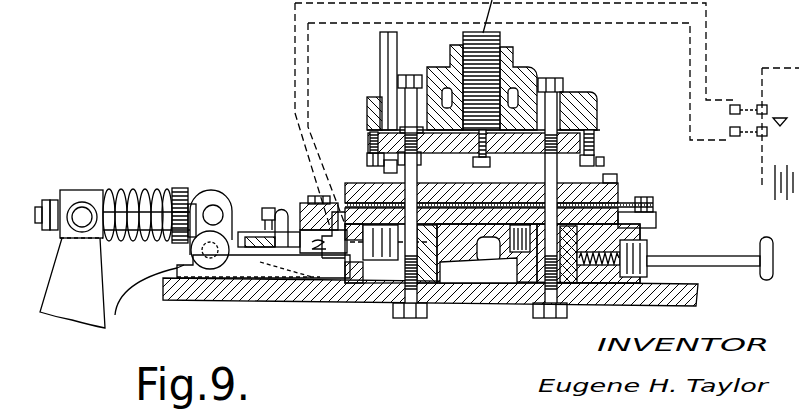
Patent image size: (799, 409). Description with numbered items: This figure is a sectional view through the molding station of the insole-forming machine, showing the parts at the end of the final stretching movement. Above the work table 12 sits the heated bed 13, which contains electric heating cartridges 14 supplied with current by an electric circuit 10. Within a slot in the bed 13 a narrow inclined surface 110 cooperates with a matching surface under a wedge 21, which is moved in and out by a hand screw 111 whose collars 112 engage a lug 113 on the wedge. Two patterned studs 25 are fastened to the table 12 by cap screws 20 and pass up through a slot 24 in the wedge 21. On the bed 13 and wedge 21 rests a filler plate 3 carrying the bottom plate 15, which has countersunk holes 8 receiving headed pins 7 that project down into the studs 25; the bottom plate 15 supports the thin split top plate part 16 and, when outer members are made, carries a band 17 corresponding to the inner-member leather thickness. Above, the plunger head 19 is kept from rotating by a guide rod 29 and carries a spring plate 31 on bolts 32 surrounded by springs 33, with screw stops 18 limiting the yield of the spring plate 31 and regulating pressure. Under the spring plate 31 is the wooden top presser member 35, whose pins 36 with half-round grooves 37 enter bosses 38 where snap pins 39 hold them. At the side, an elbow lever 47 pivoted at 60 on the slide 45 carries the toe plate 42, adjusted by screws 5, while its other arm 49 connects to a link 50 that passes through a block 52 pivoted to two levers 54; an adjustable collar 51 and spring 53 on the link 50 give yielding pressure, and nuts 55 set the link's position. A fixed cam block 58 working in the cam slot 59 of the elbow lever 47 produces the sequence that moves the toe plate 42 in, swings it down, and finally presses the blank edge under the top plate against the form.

The filler plate 3 is at (640, 230).
The screws 5 is at (266, 207).
The pins 7 is at (481, 160).
The countersunk holes 8 is at (474, 158).
The electric circuit 10 is at (710, 44).
The work table 12 is at (697, 288).
The heated bed 13 is at (342, 283).
The electric heating cartridges 14 is at (465, 275).
The bottom plate 15 is at (657, 220).
The split top plate part 16 is at (610, 190).
The band 17 is at (368, 173).
The screw stops 18 is at (491, 163).
The head 19 is at (525, 70).
The cap screws 20 is at (405, 320).
The wedge 21 is at (520, 256).
The slot 24 is at (488, 266).
The patterned studs 25 is at (372, 283).
The guide rod 29 is at (387, 52).
The spring plate 31 is at (595, 134).
The bolts 32 is at (404, 96).
The springs 33 is at (560, 120).
The top presser member 35 is at (612, 176).
The pins 36 is at (612, 164).
The half-round annular groove 37 is at (421, 161).
The bosses 38 is at (371, 135).
The snap pins 39 is at (376, 157).
The toe plate 42 is at (295, 173).
The slide 45 is at (148, 293).
The elbow lever 47 is at (245, 292).
The arm of elbow lever 49 is at (197, 192).
The link 50 is at (115, 210).
The adjustable collar 51 is at (180, 187).
The block 52 is at (63, 190).
The spring 53 is at (143, 197).
The levers 54 is at (68, 302).
The nuts 55 is at (53, 198).
The fixed cam block 58 is at (230, 196).
The cam slot 59 is at (278, 210).
The pivot 60 is at (200, 252).
The inclined surface 110 is at (510, 264).
The hand screw 111 is at (733, 250).
The collars 112 is at (648, 247).
The lug 113 is at (622, 273).